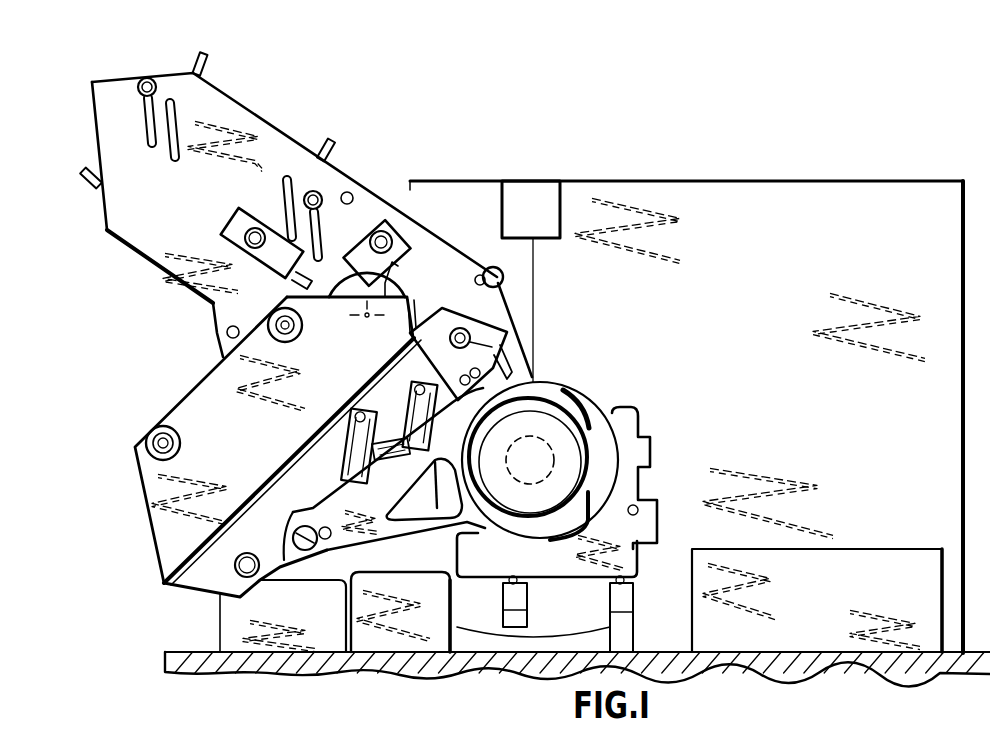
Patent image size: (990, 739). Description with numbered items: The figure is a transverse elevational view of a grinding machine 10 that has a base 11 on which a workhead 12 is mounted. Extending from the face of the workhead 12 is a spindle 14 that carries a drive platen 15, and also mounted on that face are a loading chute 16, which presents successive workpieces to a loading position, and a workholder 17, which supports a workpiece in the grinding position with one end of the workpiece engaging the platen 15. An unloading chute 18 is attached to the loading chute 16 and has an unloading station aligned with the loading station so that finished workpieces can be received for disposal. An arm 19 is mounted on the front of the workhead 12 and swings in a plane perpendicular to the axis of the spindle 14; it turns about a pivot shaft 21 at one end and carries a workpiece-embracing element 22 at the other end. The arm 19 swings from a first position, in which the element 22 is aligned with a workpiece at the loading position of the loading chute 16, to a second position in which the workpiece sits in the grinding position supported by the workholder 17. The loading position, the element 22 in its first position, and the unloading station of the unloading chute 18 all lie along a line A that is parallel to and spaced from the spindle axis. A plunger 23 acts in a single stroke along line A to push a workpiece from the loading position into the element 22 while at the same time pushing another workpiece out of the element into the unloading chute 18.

The grinding machine 10 is at (706, 181).
The base 11 is at (973, 652).
The workhead 12 is at (598, 192).
The spindle 14 is at (555, 462).
The drive platen 15 is at (547, 422).
The loading chute 16 is at (257, 128).
The workholder 17 is at (638, 458).
The unloading chute 18 is at (158, 492).
The arm 19 is at (387, 523).
The pivot shaft 21 is at (309, 550).
The workpiece-embracing element 22 is at (547, 527).
The plunger 23 is at (392, 284).
The line A is at (366, 318).